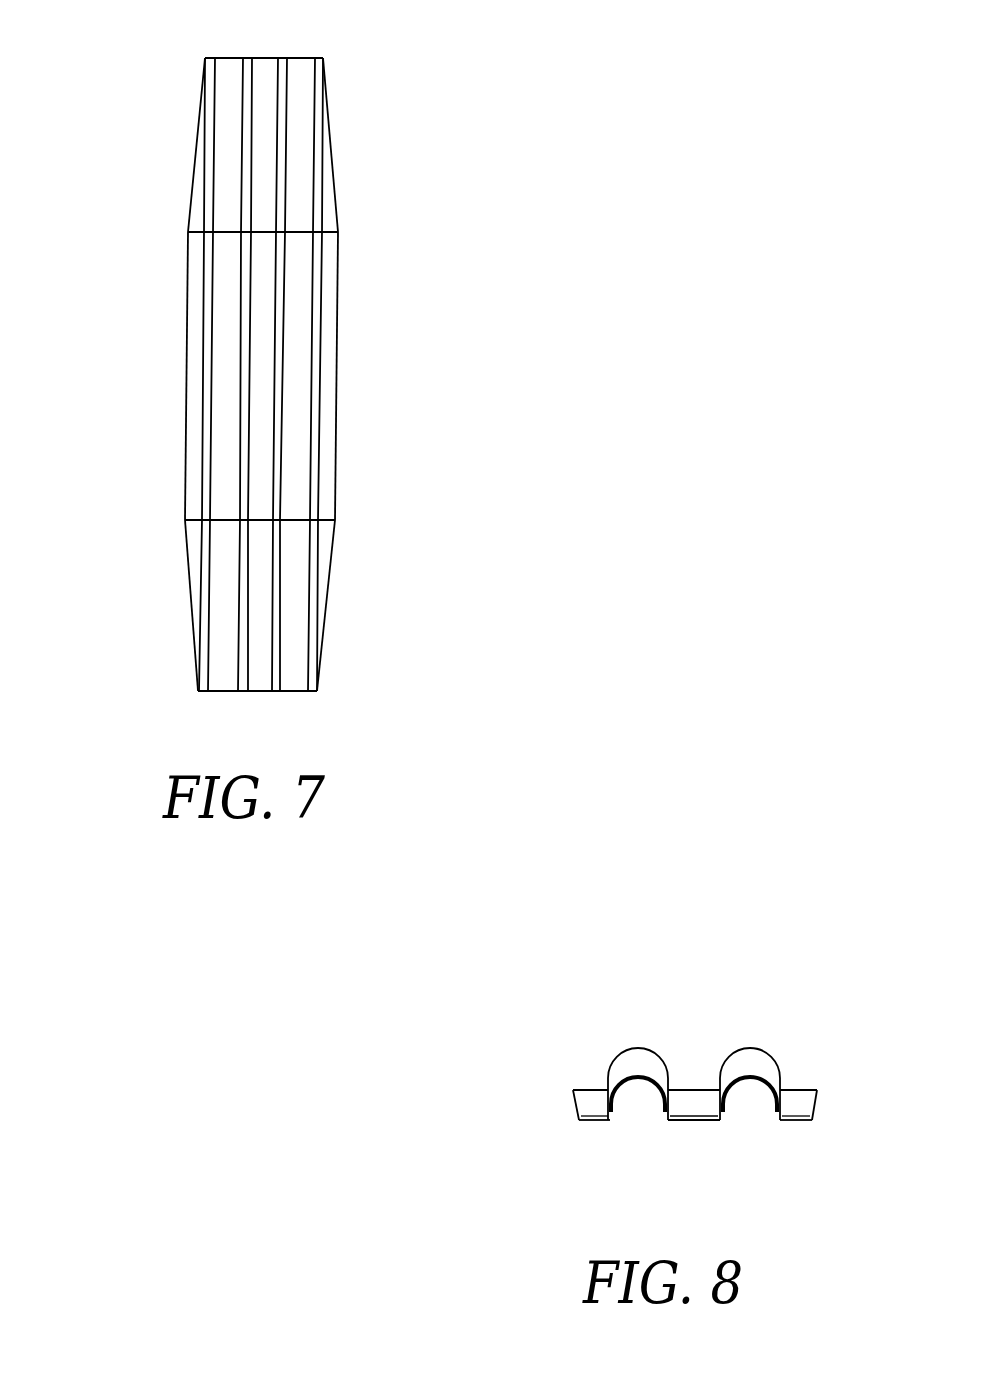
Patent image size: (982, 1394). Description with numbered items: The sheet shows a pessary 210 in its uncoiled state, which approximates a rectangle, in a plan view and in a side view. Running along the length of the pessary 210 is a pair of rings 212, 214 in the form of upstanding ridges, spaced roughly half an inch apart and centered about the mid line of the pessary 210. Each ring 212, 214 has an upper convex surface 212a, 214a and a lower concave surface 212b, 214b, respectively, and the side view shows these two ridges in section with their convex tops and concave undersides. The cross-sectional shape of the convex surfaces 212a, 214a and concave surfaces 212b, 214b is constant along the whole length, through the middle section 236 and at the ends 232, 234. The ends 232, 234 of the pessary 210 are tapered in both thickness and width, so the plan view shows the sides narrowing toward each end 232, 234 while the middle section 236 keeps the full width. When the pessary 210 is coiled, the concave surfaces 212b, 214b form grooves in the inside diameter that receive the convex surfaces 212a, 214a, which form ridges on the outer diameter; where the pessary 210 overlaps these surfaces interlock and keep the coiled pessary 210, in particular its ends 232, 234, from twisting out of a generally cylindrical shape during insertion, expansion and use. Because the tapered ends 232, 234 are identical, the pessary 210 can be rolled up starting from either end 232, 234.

In FIG. 7, the pessary 210 is at (274, 348).
In FIG. 7, the ring 212 is at (225, 360).
In FIG. 8, the ring 212 is at (610, 1052).
In FIG. 7, the ring 214 is at (293, 362).
In FIG. 8, the ring 214 is at (804, 1045).
In FIG. 7, the tapered end 232 is at (330, 122).
In FIG. 7, the tapered end 234 is at (195, 638).
In FIG. 7, the middle section 236 is at (338, 298).
In FIG. 8, the upper convex surface 212a is at (623, 1056).
In FIG. 8, the lower concave surface 212b is at (638, 1082).
In FIG. 8, the upper convex surface 214a is at (767, 1057).
In FIG. 8, the lower concave surface 214b is at (747, 1082).